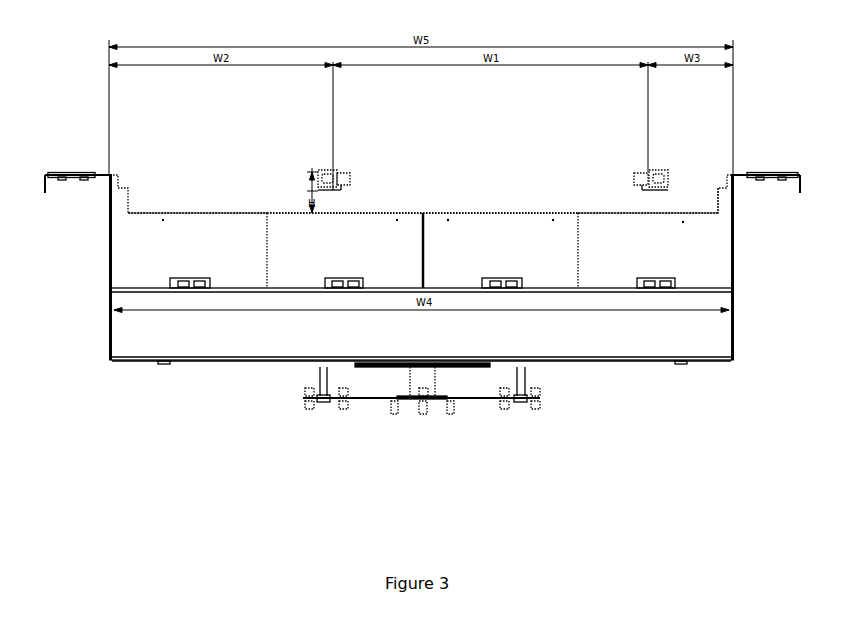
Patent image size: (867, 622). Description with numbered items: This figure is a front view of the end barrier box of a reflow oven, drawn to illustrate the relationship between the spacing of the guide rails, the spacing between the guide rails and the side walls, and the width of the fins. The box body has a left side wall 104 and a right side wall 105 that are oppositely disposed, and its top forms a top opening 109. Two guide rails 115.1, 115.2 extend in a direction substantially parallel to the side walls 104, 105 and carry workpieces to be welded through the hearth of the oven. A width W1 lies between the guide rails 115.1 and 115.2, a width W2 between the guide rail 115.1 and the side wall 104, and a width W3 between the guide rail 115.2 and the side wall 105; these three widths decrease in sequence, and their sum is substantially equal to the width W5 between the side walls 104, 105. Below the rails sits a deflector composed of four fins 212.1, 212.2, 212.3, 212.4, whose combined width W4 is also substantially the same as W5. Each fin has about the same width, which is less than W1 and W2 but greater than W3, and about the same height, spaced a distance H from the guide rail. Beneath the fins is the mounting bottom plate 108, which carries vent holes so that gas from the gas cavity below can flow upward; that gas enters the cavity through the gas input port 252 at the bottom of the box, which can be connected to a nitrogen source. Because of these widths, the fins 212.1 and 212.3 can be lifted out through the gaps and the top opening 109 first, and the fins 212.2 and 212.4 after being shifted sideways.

The side wall 104 is at (109, 250).
The side wall 105 is at (733, 244).
The mounting bottom plate 108 is at (733, 288).
The top opening 109 is at (462, 165).
The guide rail 115.1 is at (339, 169).
The guide rail 115.2 is at (658, 172).
The fin 212.1 is at (181, 239).
The fin 212.2 is at (365, 238).
The fin 212.3 is at (503, 238).
The fin 212.4 is at (684, 233).
The gas input port 252 is at (418, 377).